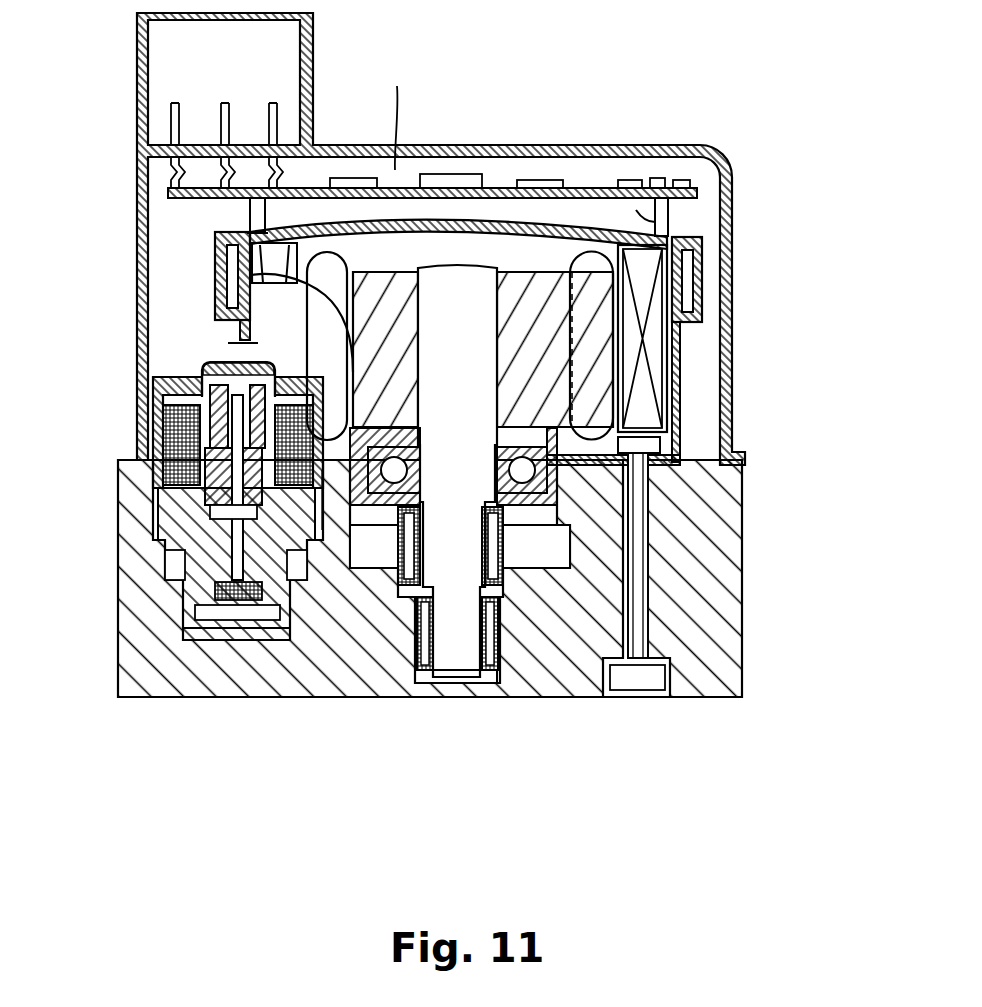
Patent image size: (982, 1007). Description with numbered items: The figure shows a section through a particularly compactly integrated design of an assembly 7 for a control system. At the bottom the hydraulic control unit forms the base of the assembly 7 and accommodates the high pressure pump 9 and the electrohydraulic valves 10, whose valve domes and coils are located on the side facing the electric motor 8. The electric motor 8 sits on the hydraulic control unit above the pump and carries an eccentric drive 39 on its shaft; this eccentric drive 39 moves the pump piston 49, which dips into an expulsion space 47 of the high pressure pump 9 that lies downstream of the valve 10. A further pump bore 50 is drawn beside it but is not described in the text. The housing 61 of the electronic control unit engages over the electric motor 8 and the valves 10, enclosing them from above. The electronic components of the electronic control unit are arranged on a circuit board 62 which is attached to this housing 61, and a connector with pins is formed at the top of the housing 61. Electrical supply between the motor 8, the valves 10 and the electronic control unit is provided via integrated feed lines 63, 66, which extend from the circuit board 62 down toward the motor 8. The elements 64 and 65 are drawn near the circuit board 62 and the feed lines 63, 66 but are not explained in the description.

The assembly 7 is at (748, 586).
The electric motor 8 is at (552, 365).
The high pressure pump 9 is at (550, 526).
The electrohydraulic valve 10 is at (190, 366).
The eccentric drive 39 is at (453, 565).
The expulsion space 47 is at (312, 595).
The pump piston 49 is at (372, 563).
The pump piston bore 50 is at (547, 557).
The housing 61 is at (732, 287).
The circuit board 62 is at (492, 188).
The feed line 63 is at (247, 211).
The contact element 64 is at (268, 212).
The contact pin 65 is at (628, 196).
The feed line 66 is at (672, 213).